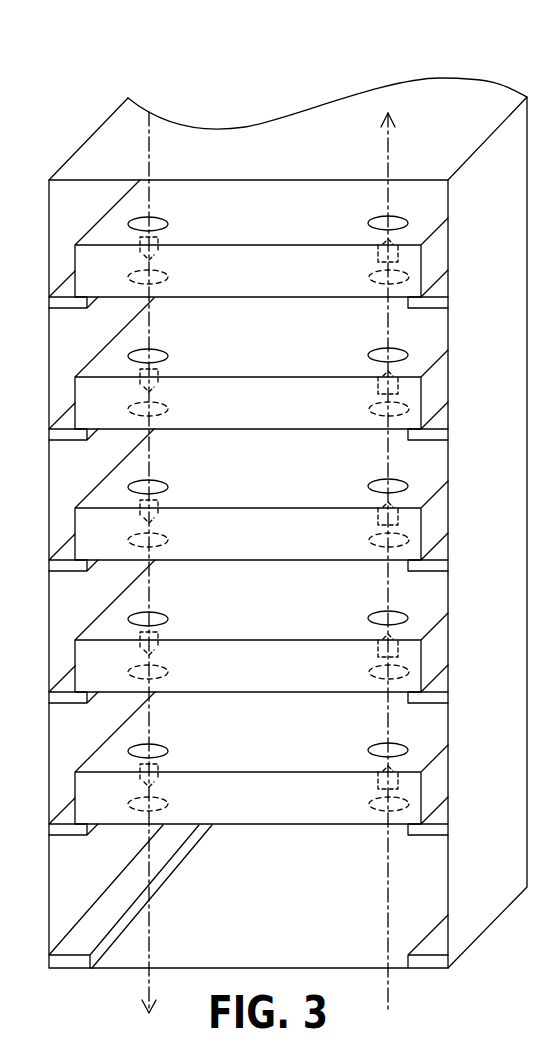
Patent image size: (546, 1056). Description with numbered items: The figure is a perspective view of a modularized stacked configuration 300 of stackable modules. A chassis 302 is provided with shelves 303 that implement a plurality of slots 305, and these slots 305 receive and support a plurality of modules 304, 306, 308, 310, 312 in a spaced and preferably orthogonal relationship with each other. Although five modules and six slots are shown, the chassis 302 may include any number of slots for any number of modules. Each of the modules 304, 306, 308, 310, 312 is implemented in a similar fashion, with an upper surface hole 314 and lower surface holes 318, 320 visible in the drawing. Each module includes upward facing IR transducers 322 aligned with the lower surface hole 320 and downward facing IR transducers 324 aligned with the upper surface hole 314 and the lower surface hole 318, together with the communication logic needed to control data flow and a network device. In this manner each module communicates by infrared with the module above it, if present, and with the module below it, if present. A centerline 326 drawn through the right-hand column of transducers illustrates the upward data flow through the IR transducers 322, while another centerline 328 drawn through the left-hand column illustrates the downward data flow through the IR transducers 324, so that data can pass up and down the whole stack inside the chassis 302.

The modularized stacked configuration 300 is at (213, 60).
The chassis 302 is at (440, 76).
The shelves 303 is at (58, 428).
The module 304 is at (270, 281).
The slots 305 is at (289, 896).
The module 306 is at (270, 413).
The module 308 is at (270, 544).
The module 310 is at (270, 676).
The module 312 is at (270, 808).
The upper surface hole 314 is at (185, 211).
The lower surface hole 318 is at (168, 277).
The lower surface hole 320 is at (369, 277).
The upward facing IR transducers 322 is at (378, 258).
The downward facing IR transducers 324 is at (158, 250).
The centerline 326 is at (390, 157).
The centerline 328 is at (150, 164).